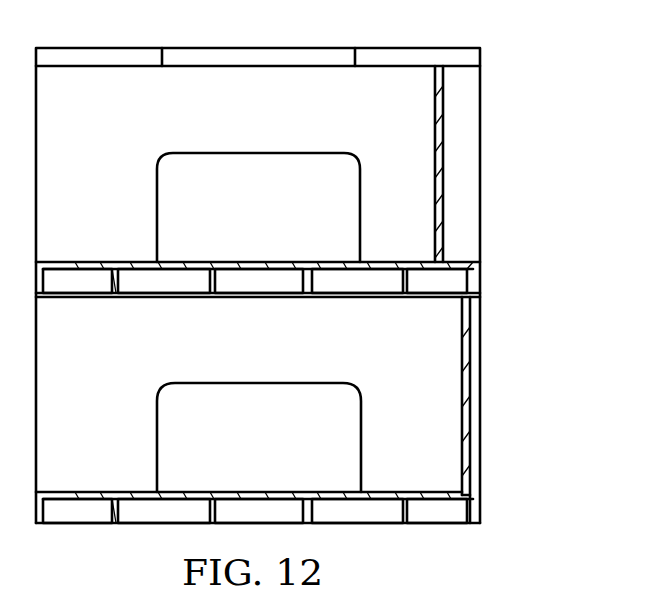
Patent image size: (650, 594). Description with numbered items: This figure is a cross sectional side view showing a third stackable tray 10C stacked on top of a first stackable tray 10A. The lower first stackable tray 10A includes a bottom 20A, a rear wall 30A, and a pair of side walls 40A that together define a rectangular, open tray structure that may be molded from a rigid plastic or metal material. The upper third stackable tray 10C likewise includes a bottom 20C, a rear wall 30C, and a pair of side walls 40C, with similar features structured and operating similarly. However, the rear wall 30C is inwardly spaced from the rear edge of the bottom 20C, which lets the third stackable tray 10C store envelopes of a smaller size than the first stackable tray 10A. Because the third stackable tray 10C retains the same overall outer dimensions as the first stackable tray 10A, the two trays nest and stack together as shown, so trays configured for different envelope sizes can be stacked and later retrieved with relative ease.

The third stackable tray 10C is at (309, 274).
The first stackable tray 10A is at (309, 386).
The rear wall 30C is at (440, 147).
The rear wall 30A is at (465, 387).
The side walls 40C is at (285, 123).
The side walls 40A is at (285, 353).
The bottom 20C is at (253, 262).
The bottom 20A is at (259, 492).